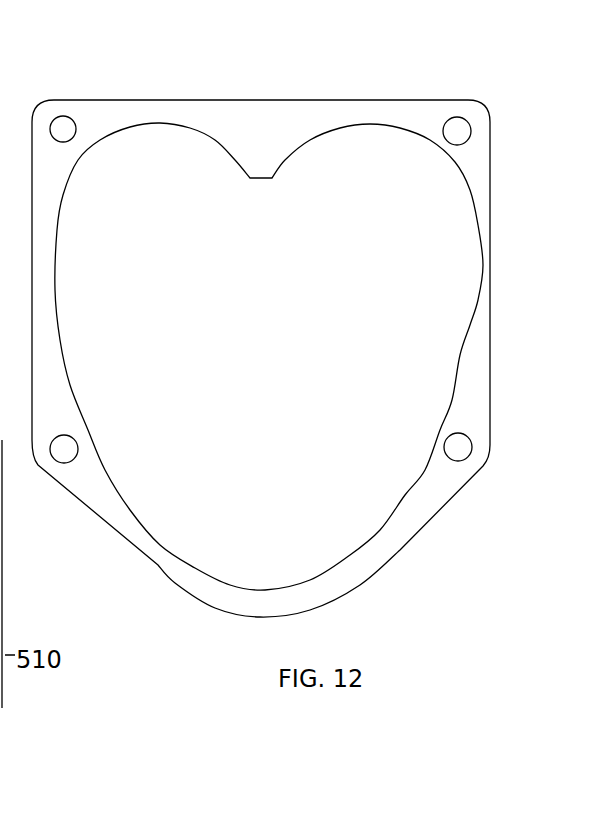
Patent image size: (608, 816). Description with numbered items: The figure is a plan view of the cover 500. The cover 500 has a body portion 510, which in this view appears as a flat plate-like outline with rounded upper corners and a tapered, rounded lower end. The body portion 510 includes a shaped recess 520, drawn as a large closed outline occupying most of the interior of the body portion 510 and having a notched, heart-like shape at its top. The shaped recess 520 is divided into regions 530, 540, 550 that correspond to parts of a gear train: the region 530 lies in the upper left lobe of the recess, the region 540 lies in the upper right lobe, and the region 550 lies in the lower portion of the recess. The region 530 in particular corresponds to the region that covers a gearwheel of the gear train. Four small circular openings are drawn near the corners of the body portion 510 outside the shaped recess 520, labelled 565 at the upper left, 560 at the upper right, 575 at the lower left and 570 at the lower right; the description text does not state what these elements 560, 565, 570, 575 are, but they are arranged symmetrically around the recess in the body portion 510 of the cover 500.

The cover 500 is at (522, 209).
The body portion 510 is at (471, 372).
The shaped recess 520 is at (290, 362).
The region 530 is at (160, 196).
The region 540 is at (402, 195).
The region 550 is at (303, 541).
The mounting hole 560 is at (453, 129).
The mounting hole 565 is at (57, 127).
The mounting hole 570 is at (460, 450).
The mounting hole 575 is at (66, 453).